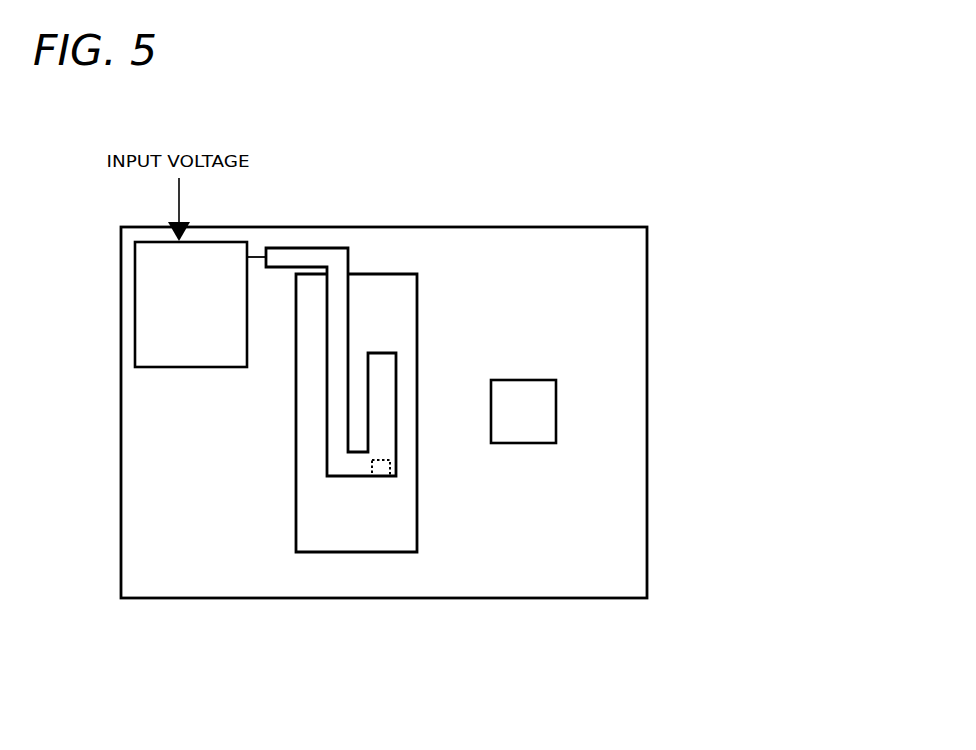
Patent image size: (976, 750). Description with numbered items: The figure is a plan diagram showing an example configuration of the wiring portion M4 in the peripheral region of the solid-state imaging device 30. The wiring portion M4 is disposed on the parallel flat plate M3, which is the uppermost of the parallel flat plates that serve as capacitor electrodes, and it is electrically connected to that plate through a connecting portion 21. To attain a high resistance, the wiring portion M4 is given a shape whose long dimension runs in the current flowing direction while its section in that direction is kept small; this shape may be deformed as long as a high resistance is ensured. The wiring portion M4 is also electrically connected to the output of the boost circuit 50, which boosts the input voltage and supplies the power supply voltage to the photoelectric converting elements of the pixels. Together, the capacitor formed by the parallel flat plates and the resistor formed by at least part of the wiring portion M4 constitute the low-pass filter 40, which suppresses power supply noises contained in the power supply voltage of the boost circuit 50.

The solid-state imaging device 30 is at (590, 201).
The boost circuit 50 is at (135, 318).
The low-pass filter 40 is at (309, 420).
The parallel flat plate M3 is at (312, 535).
The wiring portion M4 is at (316, 249).
The connecting portion 21 is at (390, 478).